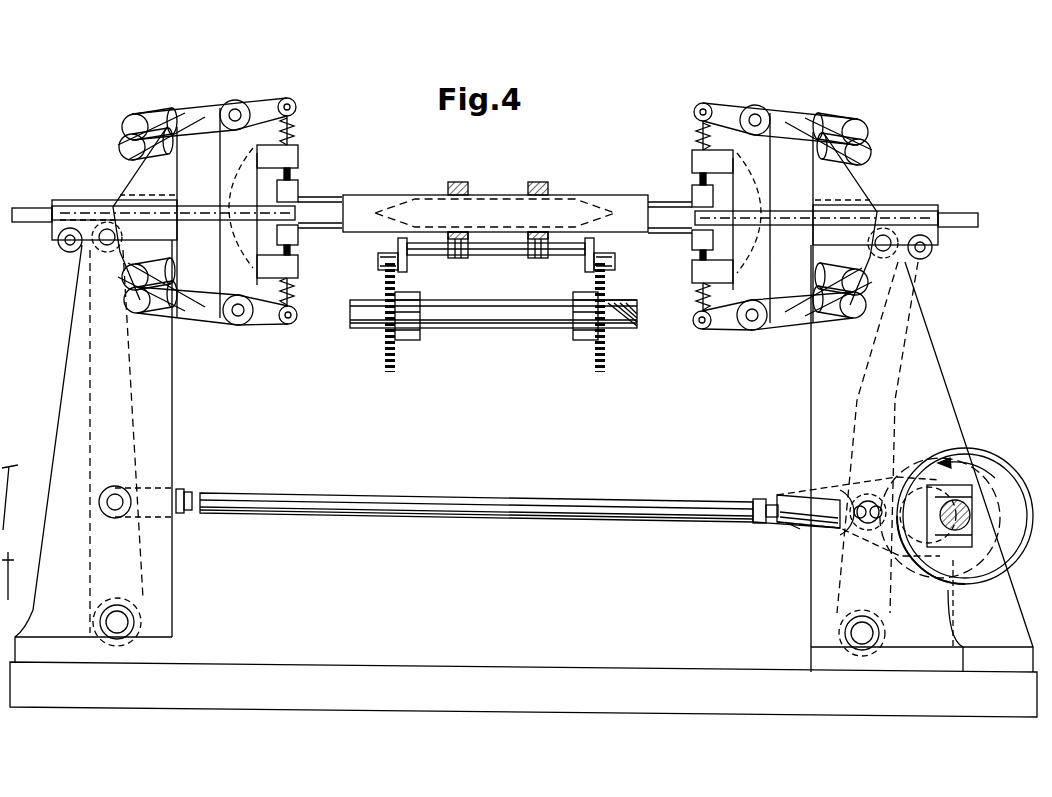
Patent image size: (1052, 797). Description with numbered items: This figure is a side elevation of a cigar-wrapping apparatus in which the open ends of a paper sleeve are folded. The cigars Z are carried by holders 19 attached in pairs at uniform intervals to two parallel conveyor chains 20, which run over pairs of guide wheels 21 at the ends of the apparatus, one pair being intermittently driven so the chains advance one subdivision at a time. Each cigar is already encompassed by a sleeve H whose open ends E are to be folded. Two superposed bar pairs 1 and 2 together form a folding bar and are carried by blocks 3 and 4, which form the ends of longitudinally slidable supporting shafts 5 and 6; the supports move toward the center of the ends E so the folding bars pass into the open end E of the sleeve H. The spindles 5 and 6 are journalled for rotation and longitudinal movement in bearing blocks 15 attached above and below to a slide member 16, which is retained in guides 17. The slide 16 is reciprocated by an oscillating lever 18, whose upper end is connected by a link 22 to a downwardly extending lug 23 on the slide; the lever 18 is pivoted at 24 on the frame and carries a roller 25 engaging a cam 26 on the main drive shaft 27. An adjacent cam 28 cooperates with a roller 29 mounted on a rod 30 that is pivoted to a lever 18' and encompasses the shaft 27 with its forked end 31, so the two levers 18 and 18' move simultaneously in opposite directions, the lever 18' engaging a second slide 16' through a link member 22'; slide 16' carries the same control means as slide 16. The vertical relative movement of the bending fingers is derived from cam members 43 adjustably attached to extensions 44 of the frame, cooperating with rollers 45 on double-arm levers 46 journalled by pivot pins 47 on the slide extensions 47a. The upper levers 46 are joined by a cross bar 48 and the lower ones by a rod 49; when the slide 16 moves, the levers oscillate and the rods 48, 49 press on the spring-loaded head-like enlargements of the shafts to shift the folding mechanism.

The bar pair 1 is at (660, 204).
The bar pair 2 is at (666, 231).
The block 3 is at (693, 192).
The block 4 is at (695, 237).
The supporting shaft 5 is at (702, 178).
The supporting shaft 6 is at (700, 255).
The bearing block 15 is at (697, 278).
The slide member 16 is at (864, 203).
The slide 16' is at (94, 198).
The guide 17 is at (897, 208).
The oscillating lever 18 is at (922, 458).
The lever 18' is at (93, 451).
The holder 19 is at (547, 195).
The conveyor chain 20 is at (585, 262).
The guide wheel 21 is at (597, 347).
The link 22 is at (925, 249).
The link member 22' is at (81, 251).
The lug 23 is at (950, 218).
The pivot 24 is at (120, 622).
The roller 25 is at (870, 488).
The cam 26 is at (1005, 518).
The main drive shaft 27 is at (967, 528).
The cam 28 is at (1005, 563).
The roller 29 is at (838, 514).
The rod 30 is at (223, 500).
The forked end 31 is at (963, 497).
The cam member 43 is at (847, 283).
The extension 44 is at (843, 290).
The roller 45 is at (868, 305).
The double-arm lever 46 is at (783, 128).
The pivot pin 47 is at (754, 328).
The slide extension 47a is at (753, 265).
The cross bar 48 is at (708, 97).
The rod 49 is at (702, 329).
The cigar Z is at (485, 205).
The sleeve end E is at (628, 220).
The sleeve H is at (515, 245).